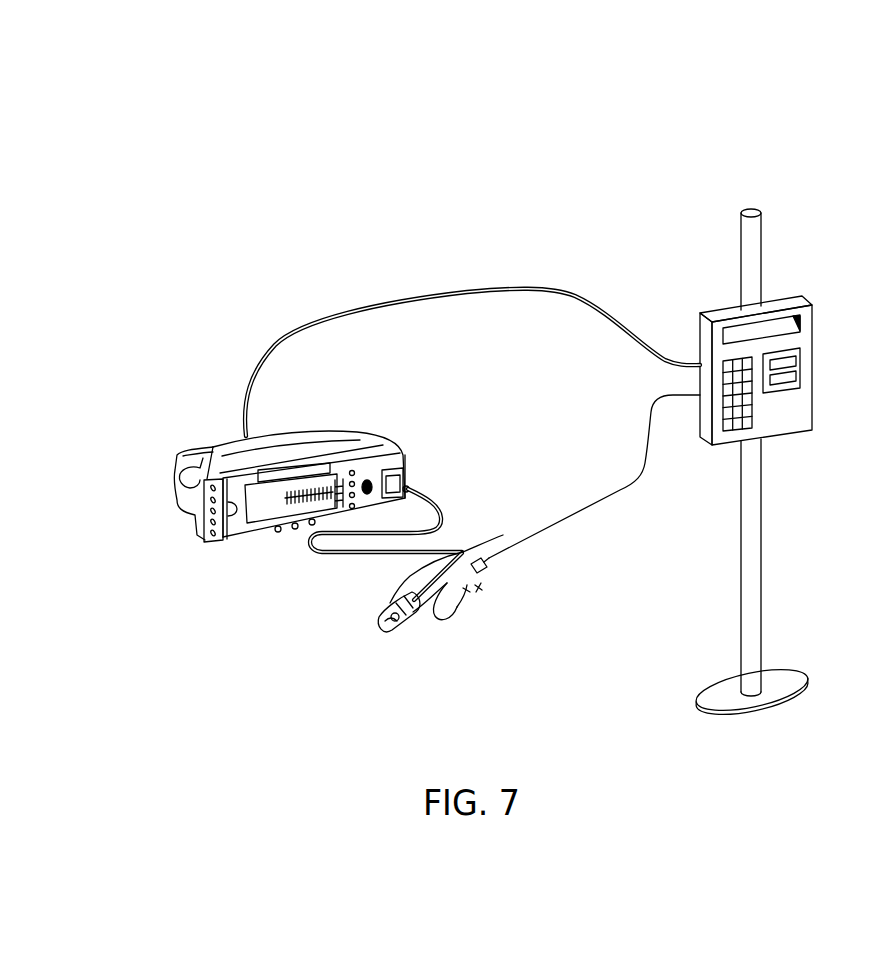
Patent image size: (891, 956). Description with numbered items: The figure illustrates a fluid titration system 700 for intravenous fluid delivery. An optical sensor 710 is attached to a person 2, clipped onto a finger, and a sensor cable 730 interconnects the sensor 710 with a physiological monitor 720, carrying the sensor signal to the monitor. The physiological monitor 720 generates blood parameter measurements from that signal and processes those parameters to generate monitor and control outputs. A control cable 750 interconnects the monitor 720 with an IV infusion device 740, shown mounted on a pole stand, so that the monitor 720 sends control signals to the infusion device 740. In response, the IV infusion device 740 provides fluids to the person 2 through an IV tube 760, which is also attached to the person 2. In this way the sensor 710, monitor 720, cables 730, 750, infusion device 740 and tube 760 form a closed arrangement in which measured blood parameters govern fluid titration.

The fluid titration system 700 is at (486, 134).
The optical sensor 710 is at (379, 627).
The physiological monitor 720 is at (218, 450).
The sensor cable 730 is at (435, 503).
The IV infusion device 740 is at (797, 303).
The control cable 750 is at (578, 290).
The IV tube 760 is at (627, 487).
The person 2 is at (480, 585).